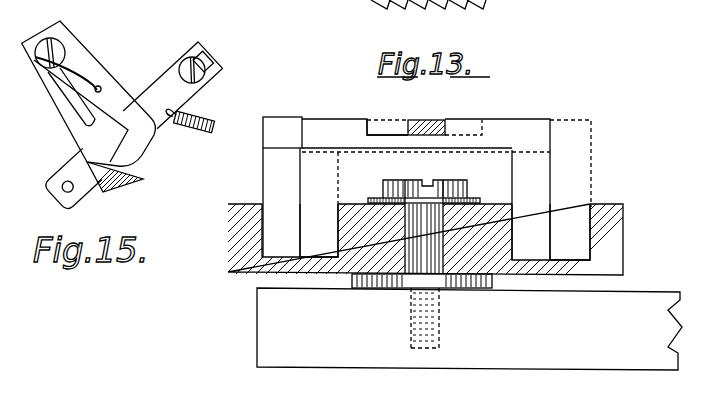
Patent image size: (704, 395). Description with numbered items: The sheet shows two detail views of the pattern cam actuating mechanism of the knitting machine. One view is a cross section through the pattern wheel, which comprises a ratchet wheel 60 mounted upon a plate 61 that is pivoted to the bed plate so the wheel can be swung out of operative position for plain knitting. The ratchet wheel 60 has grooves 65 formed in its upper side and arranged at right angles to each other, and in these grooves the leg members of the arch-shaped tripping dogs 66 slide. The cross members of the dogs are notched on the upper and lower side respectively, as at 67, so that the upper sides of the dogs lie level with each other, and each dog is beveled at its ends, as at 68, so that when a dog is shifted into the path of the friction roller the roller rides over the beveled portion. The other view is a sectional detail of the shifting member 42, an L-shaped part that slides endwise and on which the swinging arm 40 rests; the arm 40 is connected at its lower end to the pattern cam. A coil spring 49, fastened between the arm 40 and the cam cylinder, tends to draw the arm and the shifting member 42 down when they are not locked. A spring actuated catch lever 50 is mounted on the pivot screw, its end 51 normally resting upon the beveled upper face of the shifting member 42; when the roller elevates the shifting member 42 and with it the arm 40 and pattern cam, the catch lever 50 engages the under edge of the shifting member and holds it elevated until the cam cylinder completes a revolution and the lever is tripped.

In FIG. 15, the swinging arm 40 is at (80, 197).
In FIG. 15, the shifting member 42 is at (143, 179).
In FIG. 15, the coil spring 49 is at (208, 113).
In FIG. 15, the catch lever 50 is at (100, 76).
In FIG. 15, the end of catch lever 51 is at (147, 153).
In FIG. 13, the ratchet wheel 60 is at (228, 219).
In FIG. 13, the plate 61 is at (275, 320).
In FIG. 13, the grooves 65 is at (312, 207).
In FIG. 13, the tripping dogs 66 is at (333, 118).
In FIG. 13, the notch 67 is at (382, 123).
In FIG. 13, the beveled end 68 is at (263, 130).